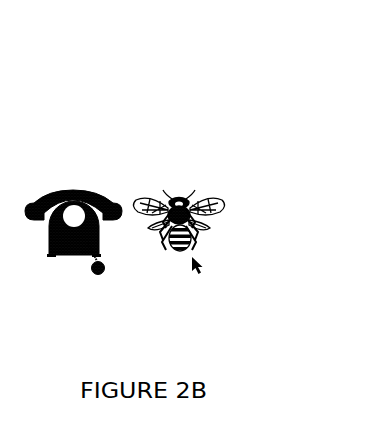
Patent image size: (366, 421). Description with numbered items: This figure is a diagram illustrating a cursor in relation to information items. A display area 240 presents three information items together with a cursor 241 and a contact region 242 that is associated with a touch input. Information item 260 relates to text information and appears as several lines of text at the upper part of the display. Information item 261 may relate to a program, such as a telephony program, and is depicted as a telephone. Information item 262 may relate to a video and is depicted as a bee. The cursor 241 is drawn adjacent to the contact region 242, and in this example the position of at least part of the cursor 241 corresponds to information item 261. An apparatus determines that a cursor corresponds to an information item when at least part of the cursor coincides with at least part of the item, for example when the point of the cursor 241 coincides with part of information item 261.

The display screen 240 is at (171, 159).
The information item 260 is at (220, 98).
The information item 261 is at (57, 258).
The information item 262 is at (198, 270).
The cursor 241 is at (102, 258).
The contact region 242 is at (98, 277).